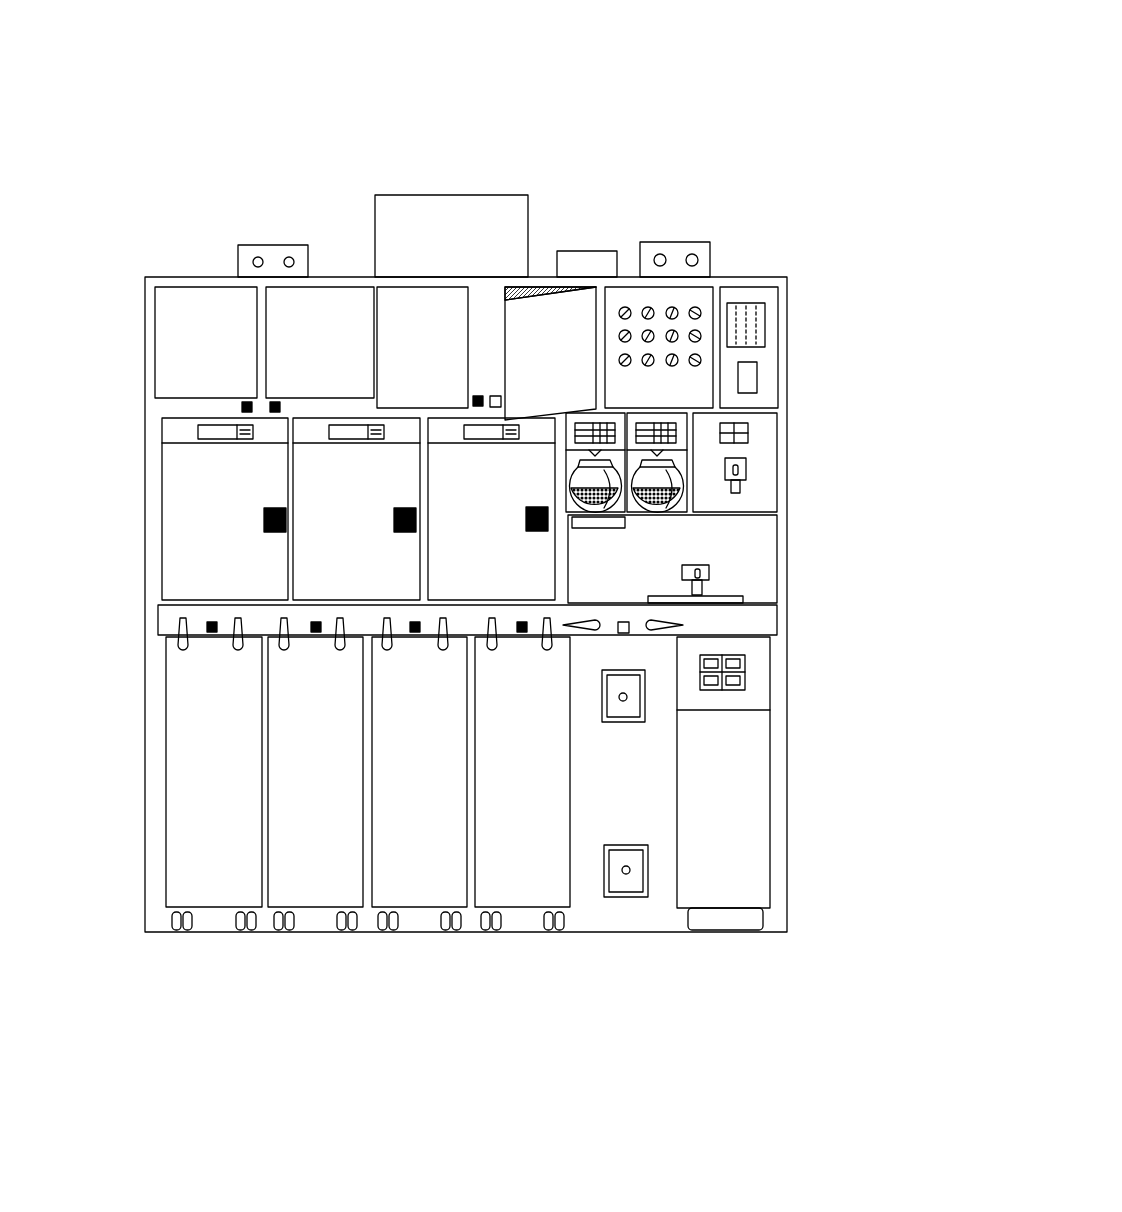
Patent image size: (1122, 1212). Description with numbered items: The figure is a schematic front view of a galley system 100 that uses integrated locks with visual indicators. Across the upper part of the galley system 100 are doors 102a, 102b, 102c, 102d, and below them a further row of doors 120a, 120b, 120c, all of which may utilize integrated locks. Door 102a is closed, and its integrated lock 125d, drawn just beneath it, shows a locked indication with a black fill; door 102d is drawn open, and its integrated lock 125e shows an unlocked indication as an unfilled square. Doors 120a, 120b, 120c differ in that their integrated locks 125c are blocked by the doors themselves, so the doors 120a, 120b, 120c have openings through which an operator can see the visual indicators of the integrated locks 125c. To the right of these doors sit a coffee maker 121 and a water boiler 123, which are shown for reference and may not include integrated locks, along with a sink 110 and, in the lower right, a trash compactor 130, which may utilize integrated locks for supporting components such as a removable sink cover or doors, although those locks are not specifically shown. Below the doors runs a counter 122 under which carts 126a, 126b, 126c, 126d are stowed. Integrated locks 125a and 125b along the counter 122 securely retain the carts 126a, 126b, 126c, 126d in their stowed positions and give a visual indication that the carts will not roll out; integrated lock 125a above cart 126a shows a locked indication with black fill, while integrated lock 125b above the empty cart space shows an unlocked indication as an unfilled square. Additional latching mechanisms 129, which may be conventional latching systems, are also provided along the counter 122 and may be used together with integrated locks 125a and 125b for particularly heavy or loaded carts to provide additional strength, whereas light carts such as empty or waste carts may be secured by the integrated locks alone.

The galley system 100 is at (740, 120).
The door 102a is at (206, 342).
The door 102b is at (320, 342).
The door 102c is at (422, 347).
The door 102d is at (550, 353).
The sink 110 is at (715, 571).
The door 120a is at (225, 509).
The door 120b is at (356, 509).
The door 120c is at (491, 509).
The coffee maker 121 is at (655, 483).
The counter 122 is at (758, 621).
The water boiler 123 is at (757, 467).
The integrated lock 125a is at (205, 624).
The integrated lock 125b is at (630, 633).
The integrated locks 125c is at (264, 520).
The integrated lock 125d is at (242, 407).
The integrated lock 125e is at (496, 396).
The cart 126a is at (214, 783).
The cart 126b is at (315, 783).
The cart 126c is at (419, 783).
The cart 126d is at (522, 783).
The additional latching mechanisms 129 is at (160, 633).
The trash compactor 130 is at (723, 783).